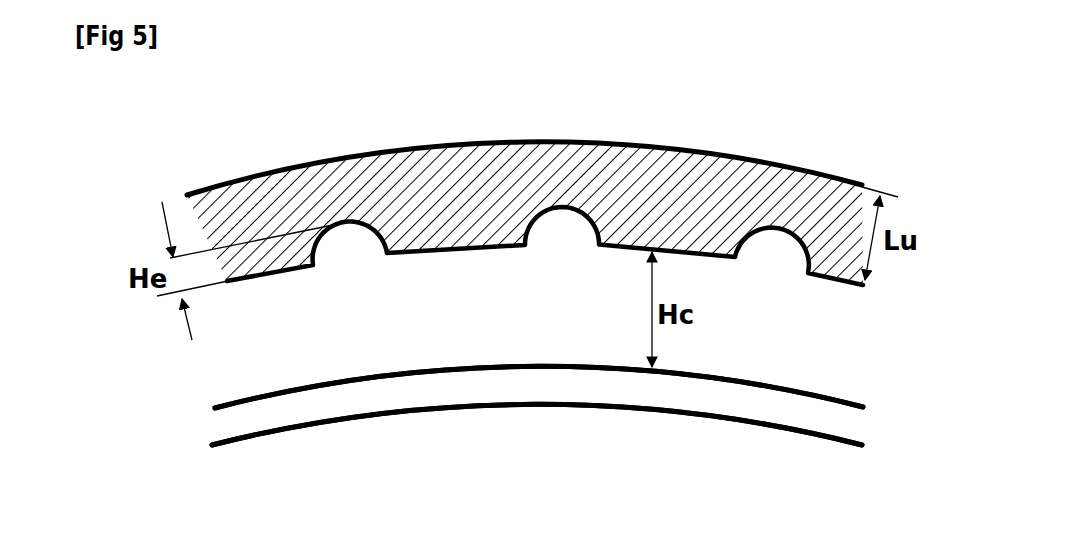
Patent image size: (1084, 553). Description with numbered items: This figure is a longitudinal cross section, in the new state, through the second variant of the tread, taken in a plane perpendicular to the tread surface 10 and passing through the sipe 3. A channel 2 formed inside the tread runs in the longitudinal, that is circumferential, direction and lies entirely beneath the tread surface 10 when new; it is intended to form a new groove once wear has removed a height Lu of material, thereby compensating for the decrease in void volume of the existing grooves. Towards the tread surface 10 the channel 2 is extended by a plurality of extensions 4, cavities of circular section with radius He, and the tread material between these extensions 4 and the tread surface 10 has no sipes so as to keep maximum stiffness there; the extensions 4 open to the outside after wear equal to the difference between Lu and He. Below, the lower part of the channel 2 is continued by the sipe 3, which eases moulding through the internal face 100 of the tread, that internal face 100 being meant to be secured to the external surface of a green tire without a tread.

The tread surface 10 is at (525, 190).
The extensions 4 is at (350, 242).
The channel 2 is at (310, 337).
The sipe 3 is at (338, 403).
The internal face 100 is at (527, 412).